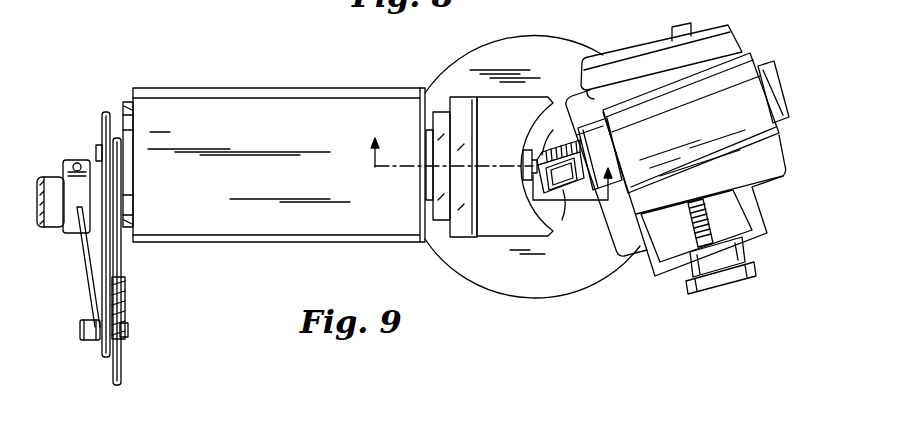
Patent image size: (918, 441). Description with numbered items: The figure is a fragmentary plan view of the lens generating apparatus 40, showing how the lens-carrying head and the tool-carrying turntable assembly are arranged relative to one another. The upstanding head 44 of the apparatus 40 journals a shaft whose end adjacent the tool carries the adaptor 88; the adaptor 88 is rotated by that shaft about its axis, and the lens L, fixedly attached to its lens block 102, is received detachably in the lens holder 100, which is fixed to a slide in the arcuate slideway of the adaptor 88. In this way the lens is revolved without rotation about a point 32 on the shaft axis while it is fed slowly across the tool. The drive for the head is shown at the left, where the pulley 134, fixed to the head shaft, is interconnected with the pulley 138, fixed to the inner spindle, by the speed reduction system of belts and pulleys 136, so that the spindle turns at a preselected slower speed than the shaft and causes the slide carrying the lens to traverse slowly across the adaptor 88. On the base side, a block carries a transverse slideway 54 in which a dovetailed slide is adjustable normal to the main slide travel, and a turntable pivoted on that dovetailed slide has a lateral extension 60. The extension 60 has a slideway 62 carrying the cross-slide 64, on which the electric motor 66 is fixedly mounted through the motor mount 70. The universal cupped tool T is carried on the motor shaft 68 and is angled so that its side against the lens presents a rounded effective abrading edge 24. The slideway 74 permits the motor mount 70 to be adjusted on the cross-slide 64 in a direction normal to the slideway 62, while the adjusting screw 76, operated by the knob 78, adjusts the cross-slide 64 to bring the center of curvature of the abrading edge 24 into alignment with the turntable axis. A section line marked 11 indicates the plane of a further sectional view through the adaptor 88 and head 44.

The lens generating apparatus 40 is at (360, 54).
The head portion 44 is at (218, 242).
The transverse slideway 54 is at (583, 289).
The lateral extension 60 is at (641, 254).
The slideway 62 is at (740, 230).
The cross-slide 64 is at (772, 173).
The electric motor 66 is at (752, 63).
The motor shaft 68 is at (576, 183).
The motor mount 70 is at (733, 45).
The slideway 74 is at (586, 93).
The adjusting screw 76 is at (692, 253).
The knob 78 is at (740, 276).
The adaptor 88 is at (500, 236).
The lens holder 100 is at (530, 153).
The lens block 102 is at (521, 158).
The point 32 is at (531, 168).
The effective abrading edge 24 is at (533, 202).
The section line 11 is at (494, 180).
The pulley 134 is at (118, 138).
The speed reduction system of belts and pulleys 136 is at (121, 247).
The pulley 138 is at (102, 131).